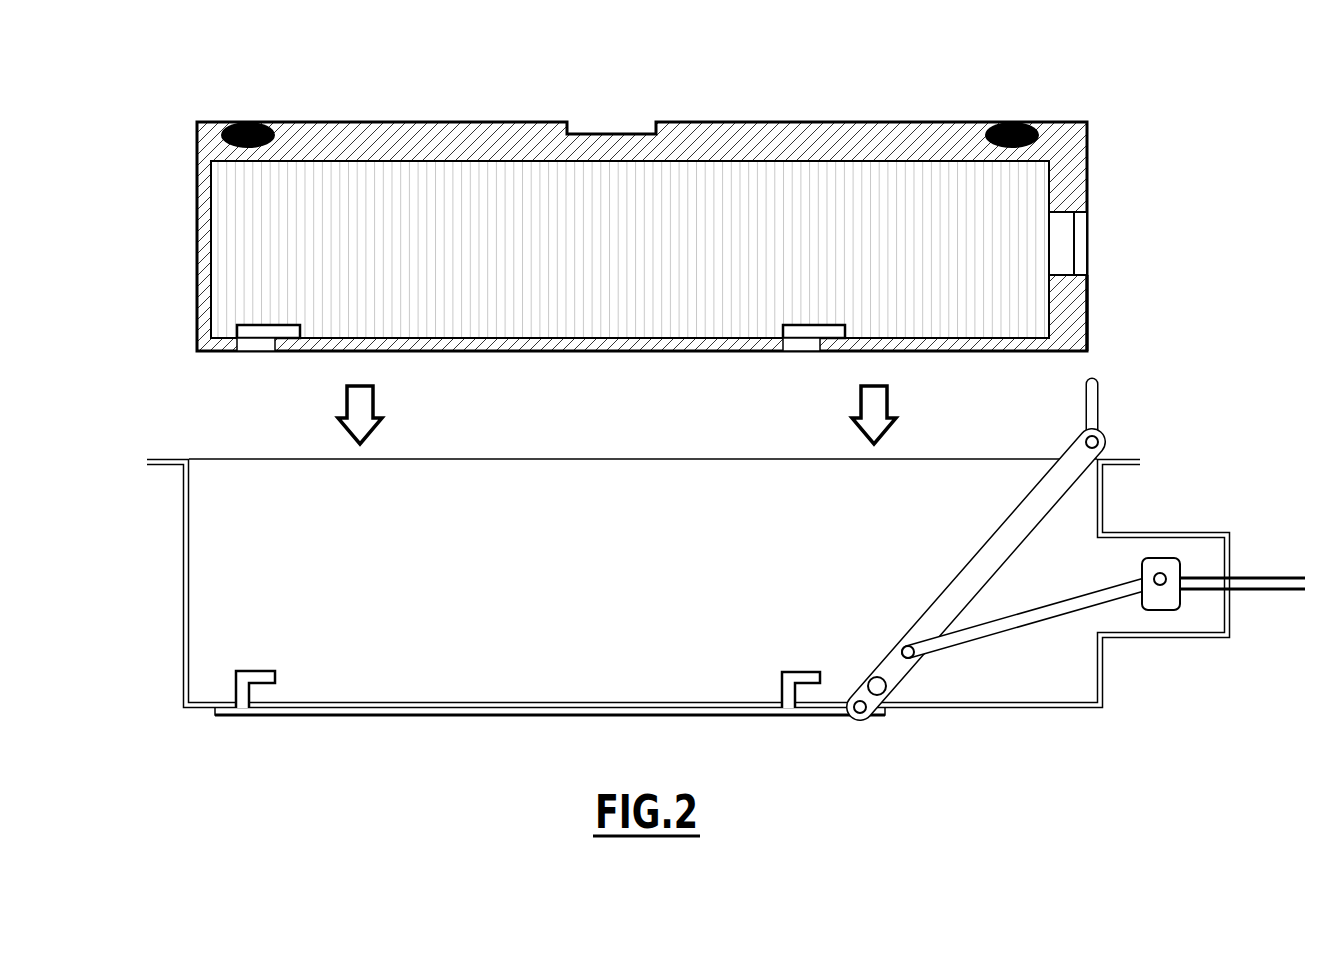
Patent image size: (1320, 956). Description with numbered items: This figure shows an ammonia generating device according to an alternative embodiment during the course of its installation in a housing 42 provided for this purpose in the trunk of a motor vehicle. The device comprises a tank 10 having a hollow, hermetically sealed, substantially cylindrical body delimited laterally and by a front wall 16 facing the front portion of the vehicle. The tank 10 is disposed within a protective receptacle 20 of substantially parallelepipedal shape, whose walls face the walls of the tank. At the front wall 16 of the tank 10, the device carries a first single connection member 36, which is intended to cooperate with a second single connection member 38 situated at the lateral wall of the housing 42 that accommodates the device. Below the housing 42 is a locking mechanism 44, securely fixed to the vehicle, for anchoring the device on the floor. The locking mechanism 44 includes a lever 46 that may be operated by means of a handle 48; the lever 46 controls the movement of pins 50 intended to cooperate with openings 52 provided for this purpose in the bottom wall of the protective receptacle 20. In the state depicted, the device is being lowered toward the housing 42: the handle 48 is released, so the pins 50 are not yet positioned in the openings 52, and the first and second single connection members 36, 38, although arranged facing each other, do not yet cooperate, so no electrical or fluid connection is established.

The tank 10 is at (488, 170).
The front wall 16 is at (1052, 310).
The protective receptacle 20 is at (318, 136).
The first single connection member 36 is at (1063, 247).
The second single connection member 38 is at (1210, 555).
The housing 42 is at (1058, 708).
The locking mechanism 44 is at (1108, 396).
The lever 46 is at (990, 562).
The handle 48 is at (1087, 403).
The pins 50 is at (265, 685).
The openings 52 is at (253, 352).